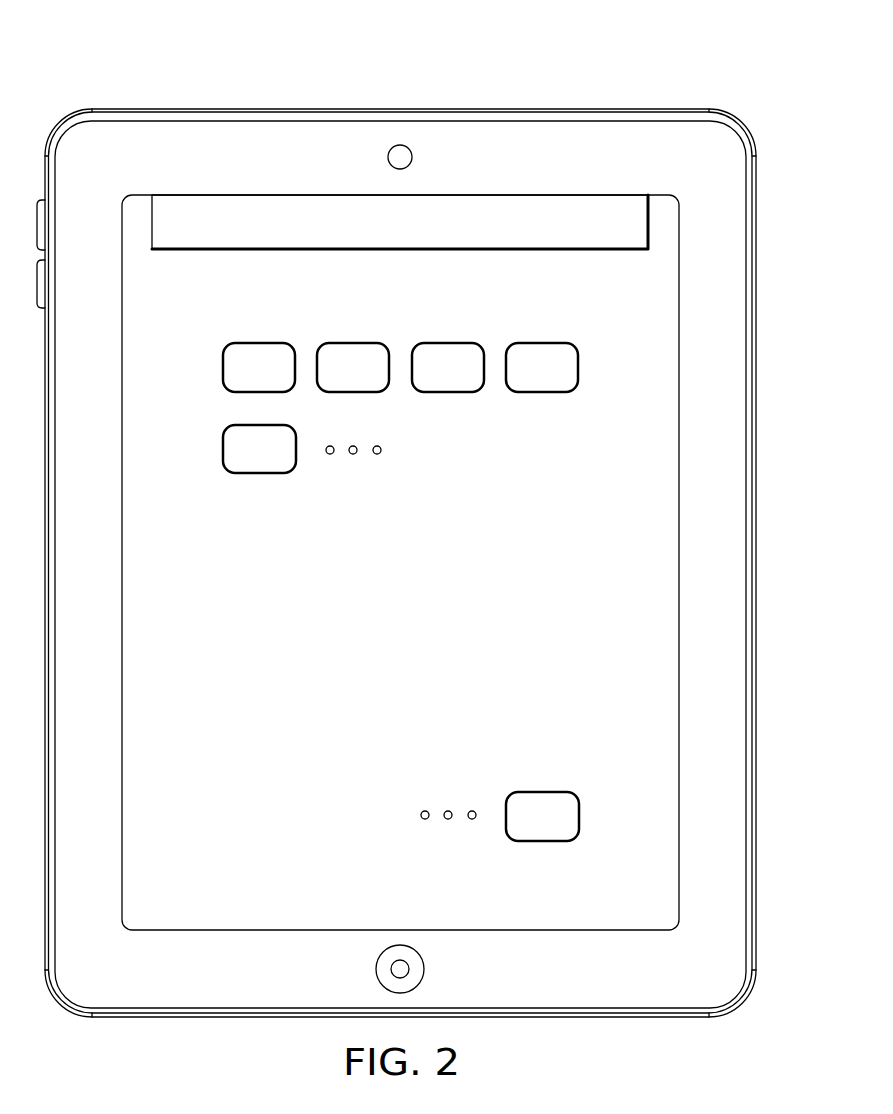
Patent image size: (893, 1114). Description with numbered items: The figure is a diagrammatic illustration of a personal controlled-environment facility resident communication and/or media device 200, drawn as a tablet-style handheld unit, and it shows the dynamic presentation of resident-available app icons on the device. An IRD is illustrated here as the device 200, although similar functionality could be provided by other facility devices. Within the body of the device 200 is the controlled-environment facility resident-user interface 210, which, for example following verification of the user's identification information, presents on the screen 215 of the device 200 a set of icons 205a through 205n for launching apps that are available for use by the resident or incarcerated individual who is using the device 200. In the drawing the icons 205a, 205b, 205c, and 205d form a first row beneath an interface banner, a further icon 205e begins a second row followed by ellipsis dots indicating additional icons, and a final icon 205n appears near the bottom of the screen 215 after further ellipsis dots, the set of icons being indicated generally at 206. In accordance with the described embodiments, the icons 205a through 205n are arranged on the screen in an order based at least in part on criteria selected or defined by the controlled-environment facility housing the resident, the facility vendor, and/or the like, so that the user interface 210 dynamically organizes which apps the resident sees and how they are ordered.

The personal controlled-environment facility resident communication and/or media dev 200 is at (608, 63).
The resident-available app icon 205a is at (258, 343).
The resident-available app icon 205b is at (353, 343).
The resident-available app icon 205c is at (449, 343).
The resident-available app icon 205d is at (542, 343).
The resident-available app icon 205e is at (258, 473).
The resident-available app icon 205n is at (542, 841).
The set of interface elements 206 is at (620, 318).
The controlled-environment facility resident-user interface 210 is at (283, 920).
The screen 215 is at (422, 678).